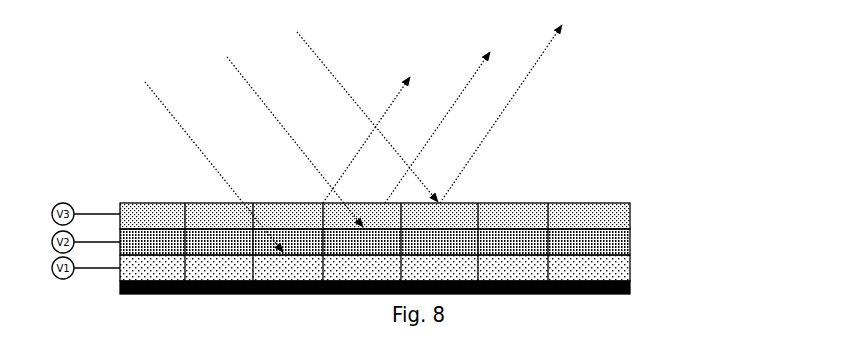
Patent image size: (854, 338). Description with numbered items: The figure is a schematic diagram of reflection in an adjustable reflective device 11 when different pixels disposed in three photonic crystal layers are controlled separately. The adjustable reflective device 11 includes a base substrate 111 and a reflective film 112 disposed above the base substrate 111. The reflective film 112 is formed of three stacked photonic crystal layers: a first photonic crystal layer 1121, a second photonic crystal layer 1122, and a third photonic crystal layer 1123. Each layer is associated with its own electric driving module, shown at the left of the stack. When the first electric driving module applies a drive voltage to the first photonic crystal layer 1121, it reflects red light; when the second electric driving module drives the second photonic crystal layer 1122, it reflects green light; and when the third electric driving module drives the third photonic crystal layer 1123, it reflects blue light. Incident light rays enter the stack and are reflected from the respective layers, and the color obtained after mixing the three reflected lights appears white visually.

The adjustable reflective device 11 is at (115, 82).
The base substrate 111 is at (630, 286).
The reflective film 112 is at (450, 231).
The first photonic crystal layer 1121 is at (630, 262).
The second photonic crystal layer 1122 is at (630, 242).
The third photonic crystal layer 1123 is at (630, 219).